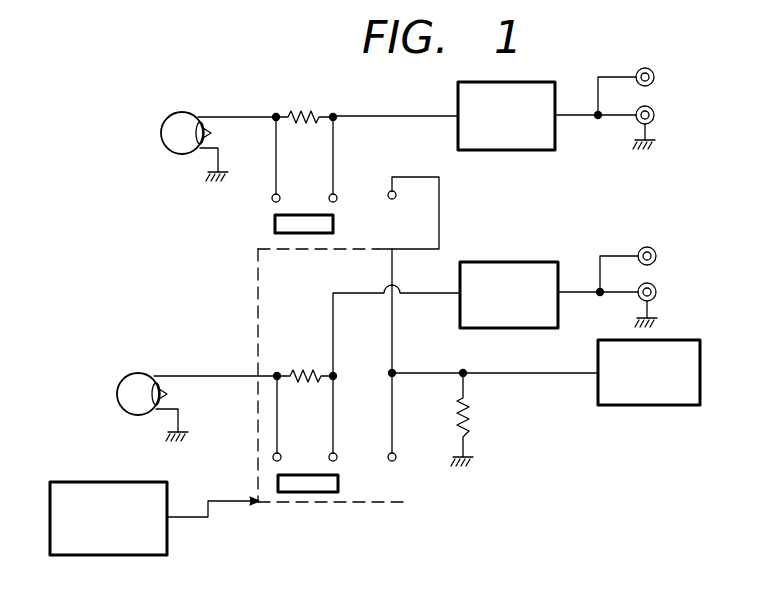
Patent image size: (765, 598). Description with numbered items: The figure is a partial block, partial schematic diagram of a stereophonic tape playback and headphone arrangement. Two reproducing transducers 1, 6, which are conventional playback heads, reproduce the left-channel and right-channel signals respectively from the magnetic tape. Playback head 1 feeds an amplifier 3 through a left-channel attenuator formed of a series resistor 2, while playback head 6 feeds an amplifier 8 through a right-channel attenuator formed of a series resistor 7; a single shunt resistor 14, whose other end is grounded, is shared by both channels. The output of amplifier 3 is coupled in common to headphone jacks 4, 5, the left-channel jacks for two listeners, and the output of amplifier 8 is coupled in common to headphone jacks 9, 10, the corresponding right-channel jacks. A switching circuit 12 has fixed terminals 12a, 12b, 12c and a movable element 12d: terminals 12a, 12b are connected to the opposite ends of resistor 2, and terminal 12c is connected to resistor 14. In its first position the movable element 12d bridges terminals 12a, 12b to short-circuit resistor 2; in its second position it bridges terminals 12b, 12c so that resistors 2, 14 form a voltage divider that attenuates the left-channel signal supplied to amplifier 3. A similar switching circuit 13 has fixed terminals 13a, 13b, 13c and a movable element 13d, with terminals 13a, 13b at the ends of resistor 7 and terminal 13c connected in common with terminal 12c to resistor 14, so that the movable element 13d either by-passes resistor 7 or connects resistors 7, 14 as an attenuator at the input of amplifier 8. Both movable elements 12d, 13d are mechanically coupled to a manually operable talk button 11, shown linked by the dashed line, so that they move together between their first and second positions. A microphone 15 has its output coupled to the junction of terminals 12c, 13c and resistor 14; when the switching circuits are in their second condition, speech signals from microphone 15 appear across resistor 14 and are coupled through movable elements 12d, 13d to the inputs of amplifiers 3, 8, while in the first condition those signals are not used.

The reproducing transducer 1 is at (172, 152).
The resistor 2 is at (299, 112).
The amplifier 3 is at (535, 151).
The headphone jack 4 is at (655, 82).
The headphone jack 5 is at (655, 120).
The reproducing transducer 6 is at (145, 372).
The resistor 7 is at (296, 370).
The amplifier 8 is at (514, 262).
The headphone jack 9 is at (657, 258).
The headphone jack 10 is at (657, 294).
The talk button 11 is at (110, 482).
The switching circuit 12 is at (308, 309).
The fixed terminal 12a is at (272, 203).
The fixed terminal 12b is at (329, 194).
The fixed terminal 12c is at (388, 194).
The movable element 12d is at (333, 224).
The switching circuit 13 is at (368, 444).
The fixed terminal 13a is at (282, 453).
The fixed terminal 13b is at (338, 454).
The fixed terminal 13c is at (397, 454).
The movable element 13d is at (338, 483).
The resistor 14 is at (470, 419).
The microphone 15 is at (665, 406).